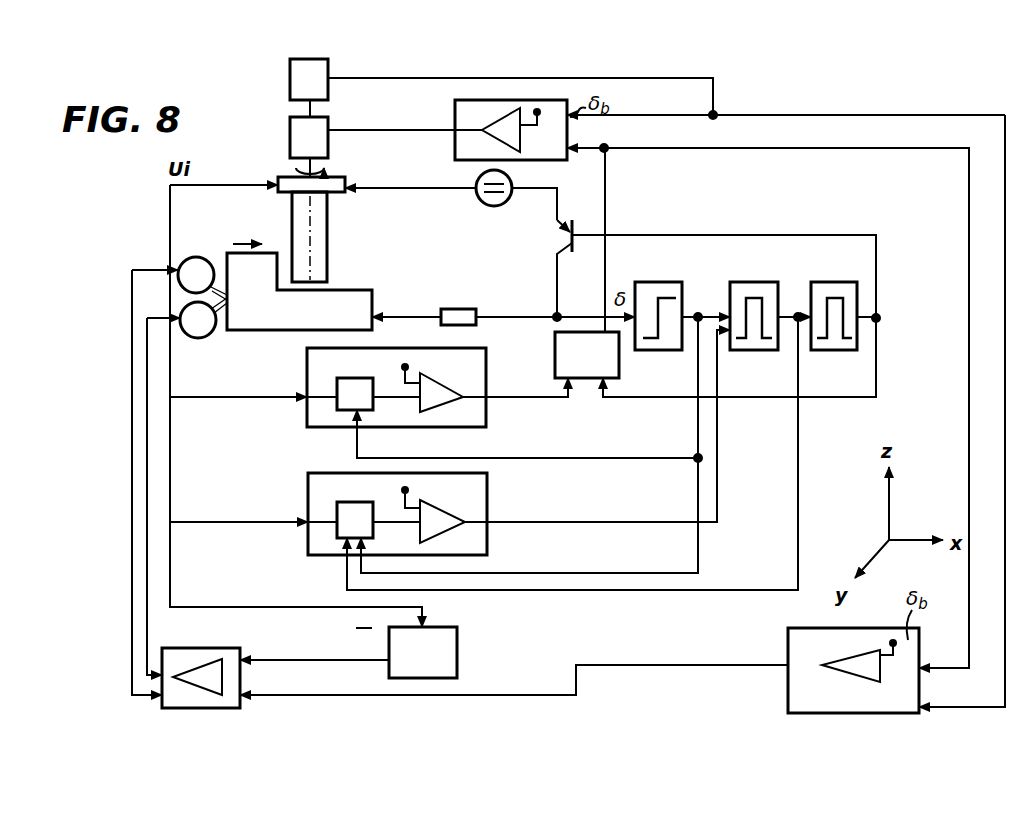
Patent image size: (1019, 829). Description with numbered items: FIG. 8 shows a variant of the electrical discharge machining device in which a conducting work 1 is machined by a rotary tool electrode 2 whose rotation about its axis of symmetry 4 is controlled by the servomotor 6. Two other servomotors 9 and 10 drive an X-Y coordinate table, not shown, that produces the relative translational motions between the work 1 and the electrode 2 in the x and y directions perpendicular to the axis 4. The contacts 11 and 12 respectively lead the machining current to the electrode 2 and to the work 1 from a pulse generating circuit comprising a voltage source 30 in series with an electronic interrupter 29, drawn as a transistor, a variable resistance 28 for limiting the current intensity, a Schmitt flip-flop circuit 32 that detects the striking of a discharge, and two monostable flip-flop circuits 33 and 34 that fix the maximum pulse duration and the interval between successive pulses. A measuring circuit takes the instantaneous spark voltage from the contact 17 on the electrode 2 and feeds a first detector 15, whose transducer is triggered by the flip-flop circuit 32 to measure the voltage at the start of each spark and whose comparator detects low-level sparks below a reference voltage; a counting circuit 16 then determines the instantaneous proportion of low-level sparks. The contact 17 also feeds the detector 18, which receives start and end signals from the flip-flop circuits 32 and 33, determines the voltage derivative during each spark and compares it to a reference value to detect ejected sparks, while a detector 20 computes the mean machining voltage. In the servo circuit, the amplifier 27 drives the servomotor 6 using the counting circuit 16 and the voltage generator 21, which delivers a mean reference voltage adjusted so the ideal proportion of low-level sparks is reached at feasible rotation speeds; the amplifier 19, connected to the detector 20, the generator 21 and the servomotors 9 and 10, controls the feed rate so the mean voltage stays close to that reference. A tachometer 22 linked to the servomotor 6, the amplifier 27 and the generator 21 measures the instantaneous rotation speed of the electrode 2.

The conducting work 1 is at (350, 296).
The rotary tool electrode 2 is at (318, 266).
The axis of symmetry 4 is at (320, 240).
The servomotor 6 is at (272, 104).
The servomotor 9 is at (197, 258).
The servomotor 10 is at (198, 344).
The contact 11 is at (350, 180).
The contact 12 is at (382, 312).
The first detector 15 is at (483, 425).
The counting circuit 16 is at (598, 364).
The contact 17 is at (268, 180).
The detector 18 is at (488, 549).
The amplifier 19 is at (188, 658).
The detector 20 is at (447, 656).
The voltage generator 21 is at (785, 691).
The tachometer 22 is at (323, 91).
The amplifier 27 is at (470, 148).
The variable resistance 28 is at (466, 307).
The electronic interrupter 29 is at (562, 244).
The voltage source 30 is at (487, 206).
The Schmitt flip-flop circuit 32 is at (656, 284).
The monostable flip-flop circuit 33 is at (754, 284).
The monostable flip-flop circuit 34 is at (834, 284).